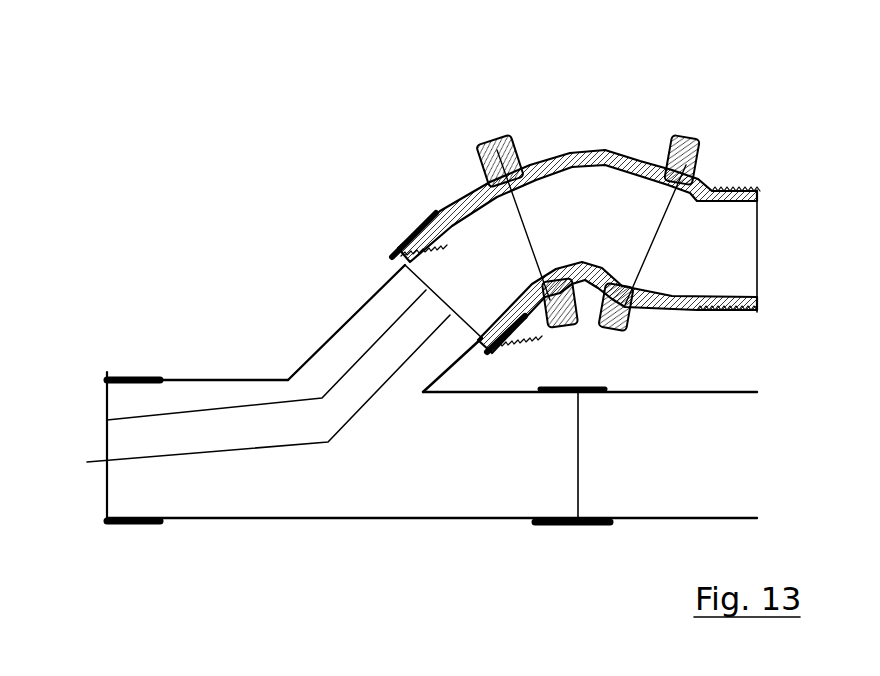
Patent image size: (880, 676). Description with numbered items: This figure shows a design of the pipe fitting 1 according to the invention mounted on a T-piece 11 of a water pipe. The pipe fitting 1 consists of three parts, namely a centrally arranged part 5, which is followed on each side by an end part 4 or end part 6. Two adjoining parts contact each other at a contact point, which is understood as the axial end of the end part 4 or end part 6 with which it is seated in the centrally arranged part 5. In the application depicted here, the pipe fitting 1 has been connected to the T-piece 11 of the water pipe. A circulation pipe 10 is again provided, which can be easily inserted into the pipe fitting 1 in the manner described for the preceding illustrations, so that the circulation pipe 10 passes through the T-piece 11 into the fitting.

The pipe fitting 1 is at (613, 112).
The end part 4 is at (457, 190).
The centrally arranged part 5 is at (560, 150).
The end part 6 is at (697, 186).
The circulation pipe 10 is at (89, 420).
The T-piece 11 is at (327, 341).